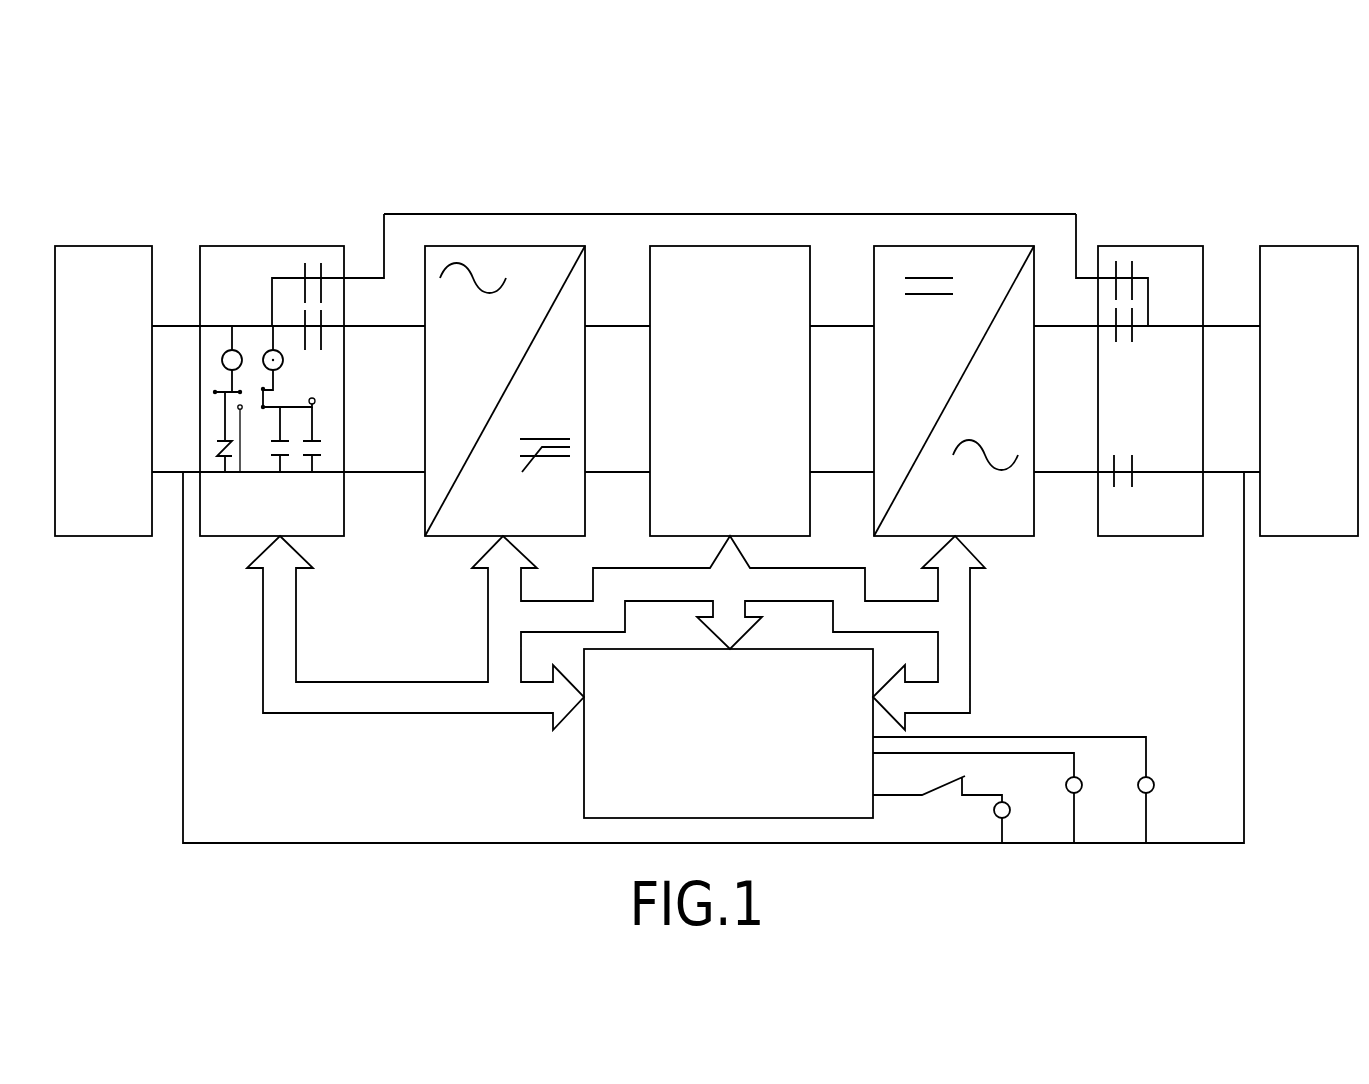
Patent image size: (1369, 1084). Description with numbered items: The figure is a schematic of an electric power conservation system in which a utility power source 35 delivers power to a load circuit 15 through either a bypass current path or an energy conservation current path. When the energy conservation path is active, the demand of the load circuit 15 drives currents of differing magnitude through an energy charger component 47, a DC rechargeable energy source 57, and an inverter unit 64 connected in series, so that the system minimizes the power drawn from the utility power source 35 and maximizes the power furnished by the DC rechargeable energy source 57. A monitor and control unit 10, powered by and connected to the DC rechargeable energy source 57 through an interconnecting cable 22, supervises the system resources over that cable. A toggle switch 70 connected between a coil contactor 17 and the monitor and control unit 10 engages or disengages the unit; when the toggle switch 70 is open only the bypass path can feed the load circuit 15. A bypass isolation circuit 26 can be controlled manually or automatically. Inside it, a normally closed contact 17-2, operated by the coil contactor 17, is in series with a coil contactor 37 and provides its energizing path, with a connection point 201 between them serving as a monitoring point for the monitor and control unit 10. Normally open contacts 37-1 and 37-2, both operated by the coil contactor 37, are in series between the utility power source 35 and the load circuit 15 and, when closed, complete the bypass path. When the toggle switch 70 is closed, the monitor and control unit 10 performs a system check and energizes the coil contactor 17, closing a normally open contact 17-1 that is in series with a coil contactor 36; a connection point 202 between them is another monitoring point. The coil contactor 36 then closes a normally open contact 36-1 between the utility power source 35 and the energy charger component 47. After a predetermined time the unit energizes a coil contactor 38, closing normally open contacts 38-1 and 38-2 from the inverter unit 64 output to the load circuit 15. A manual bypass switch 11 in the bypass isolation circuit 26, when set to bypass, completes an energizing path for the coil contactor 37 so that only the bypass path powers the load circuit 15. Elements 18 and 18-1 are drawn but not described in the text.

The monitor and control unit 10 is at (584, 745).
The manual bypass switch 11 is at (264, 399).
The load circuit 15 is at (1310, 246).
The coil contactor 17 is at (1009, 804).
The normally open contact 17-1 is at (282, 440).
The normally closed contact 17-2 is at (217, 441).
The indicator terminal 18 is at (1081, 778).
The capacitor 18-1 is at (314, 441).
The interconnecting cable 22 is at (488, 649).
The bypass isolation circuit 26 is at (323, 246).
The utility power source 35 is at (130, 246).
The coil contactor 36 is at (322, 340).
The normally open contact 36-1 is at (303, 325).
The coil contactor 37 is at (228, 345).
The normally open contact 37-1 is at (303, 275).
The normally open contact 37-2 is at (1133, 277).
The coil contactor 38 is at (1152, 778).
The normally open contact 38-1 is at (1133, 322).
The normally open contact 38-2 is at (1133, 472).
The energy charger component 47 is at (537, 246).
The DC rechargeable energy source 57 is at (730, 246).
The inverter unit 64 is at (910, 246).
The toggle switch 70 is at (973, 776).
The connection point 201 is at (216, 391).
The connection point 202 is at (315, 400).